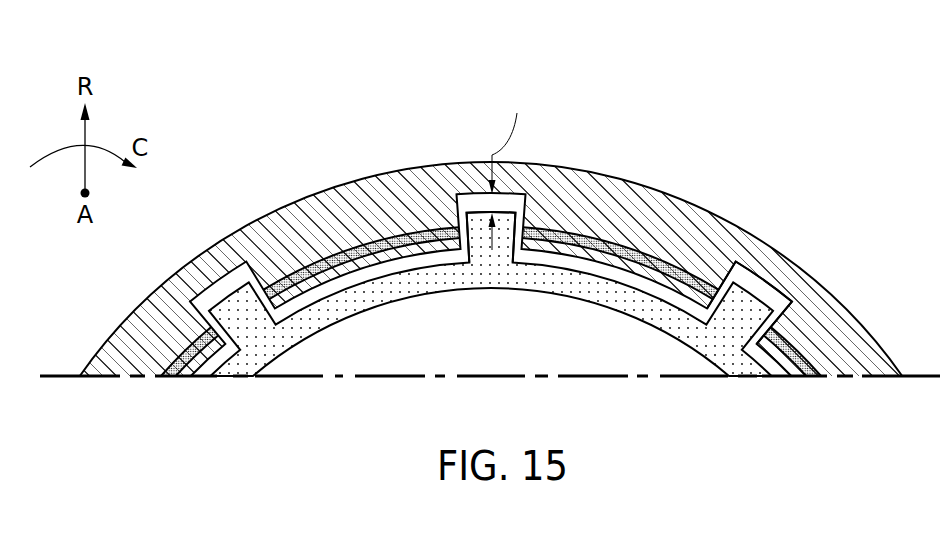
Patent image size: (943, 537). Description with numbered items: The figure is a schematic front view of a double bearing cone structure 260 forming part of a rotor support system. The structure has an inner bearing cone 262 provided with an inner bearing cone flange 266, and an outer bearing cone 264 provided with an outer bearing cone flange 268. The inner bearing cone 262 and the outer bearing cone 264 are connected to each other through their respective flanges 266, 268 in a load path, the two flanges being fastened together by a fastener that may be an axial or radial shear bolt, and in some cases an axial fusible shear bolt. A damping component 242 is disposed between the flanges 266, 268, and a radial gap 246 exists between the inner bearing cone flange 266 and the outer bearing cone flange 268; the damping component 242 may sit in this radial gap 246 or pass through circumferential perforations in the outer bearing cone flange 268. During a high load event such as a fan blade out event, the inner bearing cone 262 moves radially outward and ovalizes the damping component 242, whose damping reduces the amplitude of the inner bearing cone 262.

The double bearing cone structure 260 is at (471, 196).
The outer bearing cone 264 is at (748, 236).
The damping component 242 is at (604, 254).
The inner bearing cone 262 is at (543, 283).
The inner bearing cone flange 266 is at (505, 253).
The outer bearing cone flange 268 is at (762, 283).
The radial gap 246 is at (514, 169).